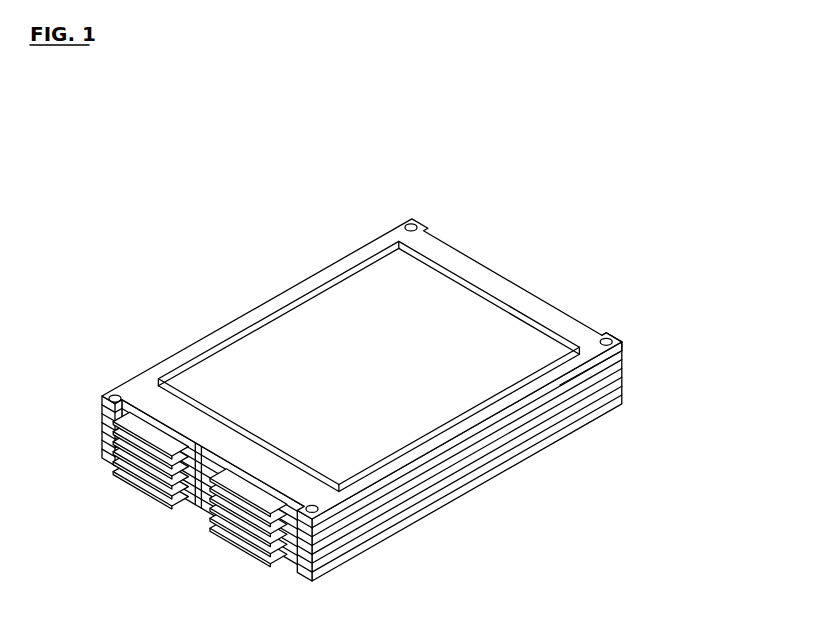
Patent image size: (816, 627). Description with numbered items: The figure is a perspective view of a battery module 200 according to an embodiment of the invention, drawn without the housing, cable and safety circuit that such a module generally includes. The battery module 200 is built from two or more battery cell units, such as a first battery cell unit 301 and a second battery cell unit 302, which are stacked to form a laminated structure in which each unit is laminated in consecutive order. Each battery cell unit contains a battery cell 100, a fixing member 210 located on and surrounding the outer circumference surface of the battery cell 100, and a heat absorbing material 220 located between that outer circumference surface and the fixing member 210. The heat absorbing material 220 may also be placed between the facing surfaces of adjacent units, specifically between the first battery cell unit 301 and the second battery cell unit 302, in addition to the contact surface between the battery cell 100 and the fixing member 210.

The battery cell 100 is at (430, 284).
The battery module 200 is at (115, 201).
The fixing member 210 is at (512, 292).
The heat absorbing material 220 is at (522, 388).
The first battery cell unit 301 is at (623, 343).
The second battery cell unit 302 is at (623, 354).